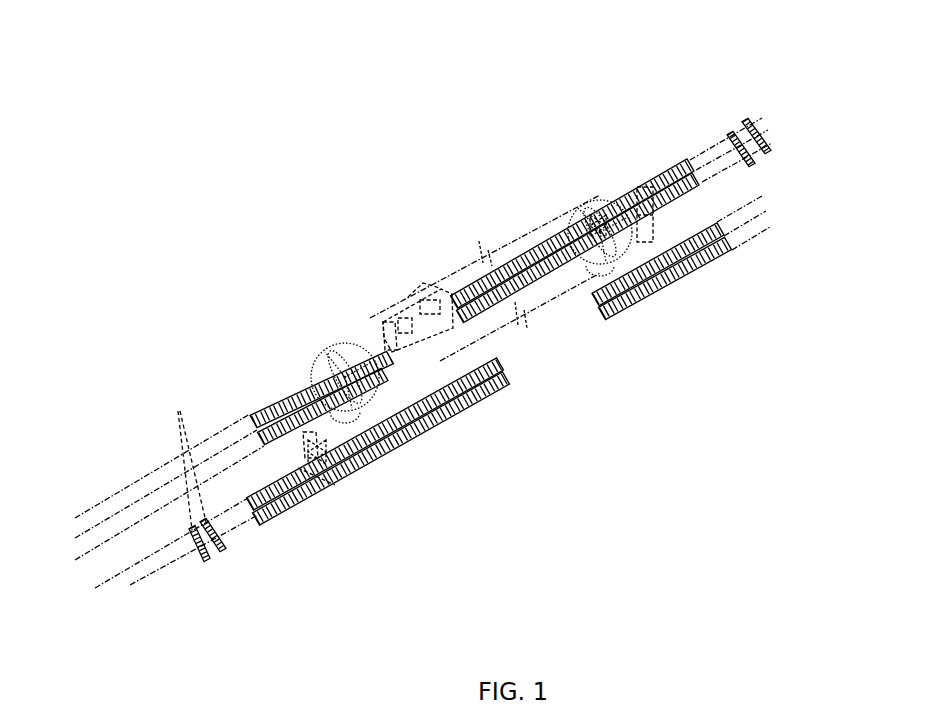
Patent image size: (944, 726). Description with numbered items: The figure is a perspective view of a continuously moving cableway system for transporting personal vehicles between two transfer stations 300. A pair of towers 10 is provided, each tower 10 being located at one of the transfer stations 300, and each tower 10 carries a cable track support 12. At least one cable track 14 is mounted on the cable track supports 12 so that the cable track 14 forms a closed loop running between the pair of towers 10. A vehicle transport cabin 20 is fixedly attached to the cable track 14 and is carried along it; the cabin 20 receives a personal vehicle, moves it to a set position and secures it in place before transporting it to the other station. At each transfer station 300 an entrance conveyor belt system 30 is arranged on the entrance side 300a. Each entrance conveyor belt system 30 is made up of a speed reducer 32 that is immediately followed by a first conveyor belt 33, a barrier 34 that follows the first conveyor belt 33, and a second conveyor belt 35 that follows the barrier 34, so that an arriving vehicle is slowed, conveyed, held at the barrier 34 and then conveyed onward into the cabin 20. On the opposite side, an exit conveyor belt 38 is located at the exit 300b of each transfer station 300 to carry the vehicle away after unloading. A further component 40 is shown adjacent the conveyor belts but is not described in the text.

The transfer station 300 is at (780, 333).
The entrance side 300a is at (162, 558).
The exit 300b is at (150, 483).
The entrance conveyor belt system 30 is at (493, 214).
The speed reducer 32 is at (742, 121).
The first conveyor belt 33 is at (297, 504).
The barrier 34 is at (296, 393).
The second conveyor belt 35 is at (393, 437).
The exit conveyor belt 38 is at (258, 400).
The coupling 40 is at (352, 477).
The tower 10 is at (340, 345).
The cable track support 12 is at (572, 247).
The cable track 14 is at (460, 258).
The vehicle transport cabin 20 is at (395, 305).